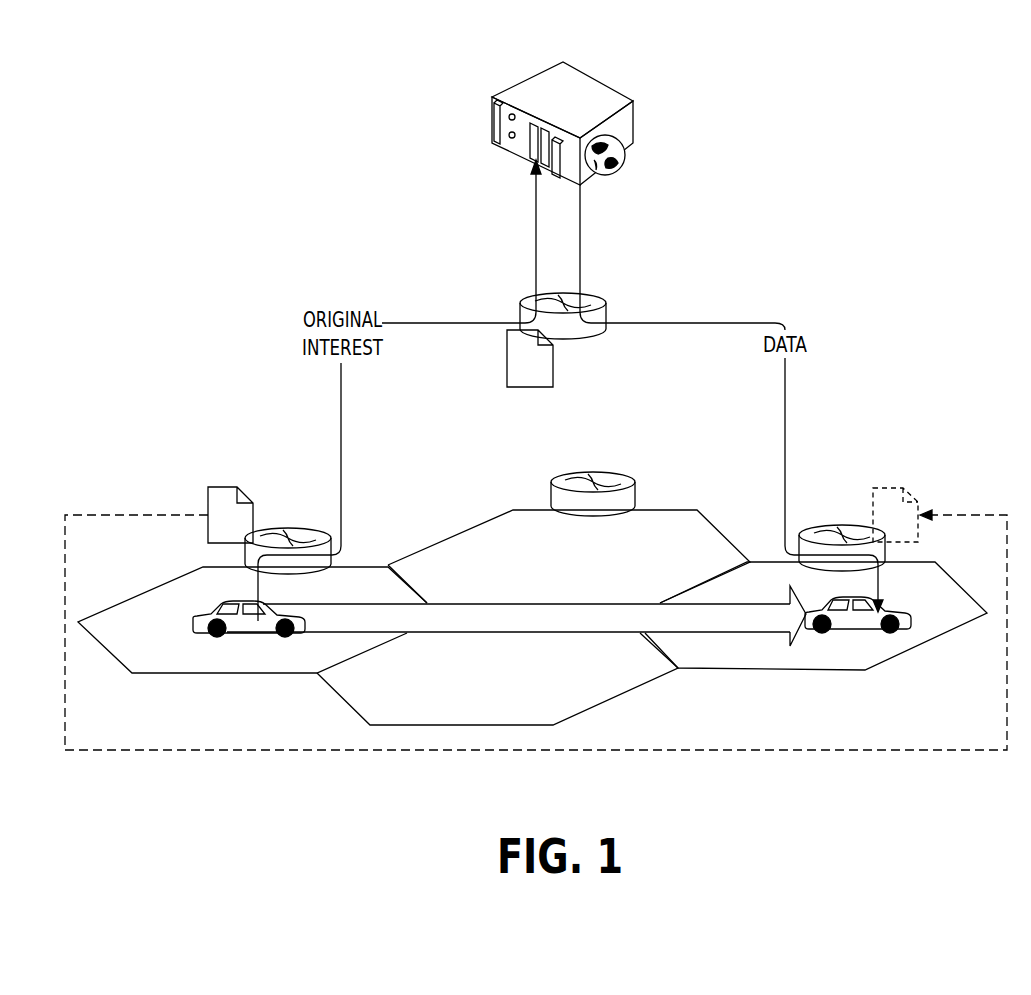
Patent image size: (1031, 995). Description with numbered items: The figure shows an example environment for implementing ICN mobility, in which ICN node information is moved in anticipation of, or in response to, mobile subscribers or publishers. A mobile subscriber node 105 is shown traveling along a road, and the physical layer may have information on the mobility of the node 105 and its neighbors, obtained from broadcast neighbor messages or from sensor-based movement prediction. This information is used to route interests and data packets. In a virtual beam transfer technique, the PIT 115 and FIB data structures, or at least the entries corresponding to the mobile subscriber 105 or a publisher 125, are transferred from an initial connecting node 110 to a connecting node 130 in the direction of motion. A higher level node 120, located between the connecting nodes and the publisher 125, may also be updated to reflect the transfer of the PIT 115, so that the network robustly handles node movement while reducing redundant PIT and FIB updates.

The node 105 is at (250, 637).
The initial connecting node 110 is at (287, 530).
The PIT 115 is at (208, 490).
The higher level node 120 is at (522, 305).
The publisher 125 is at (535, 82).
The connecting node 130 is at (842, 525).